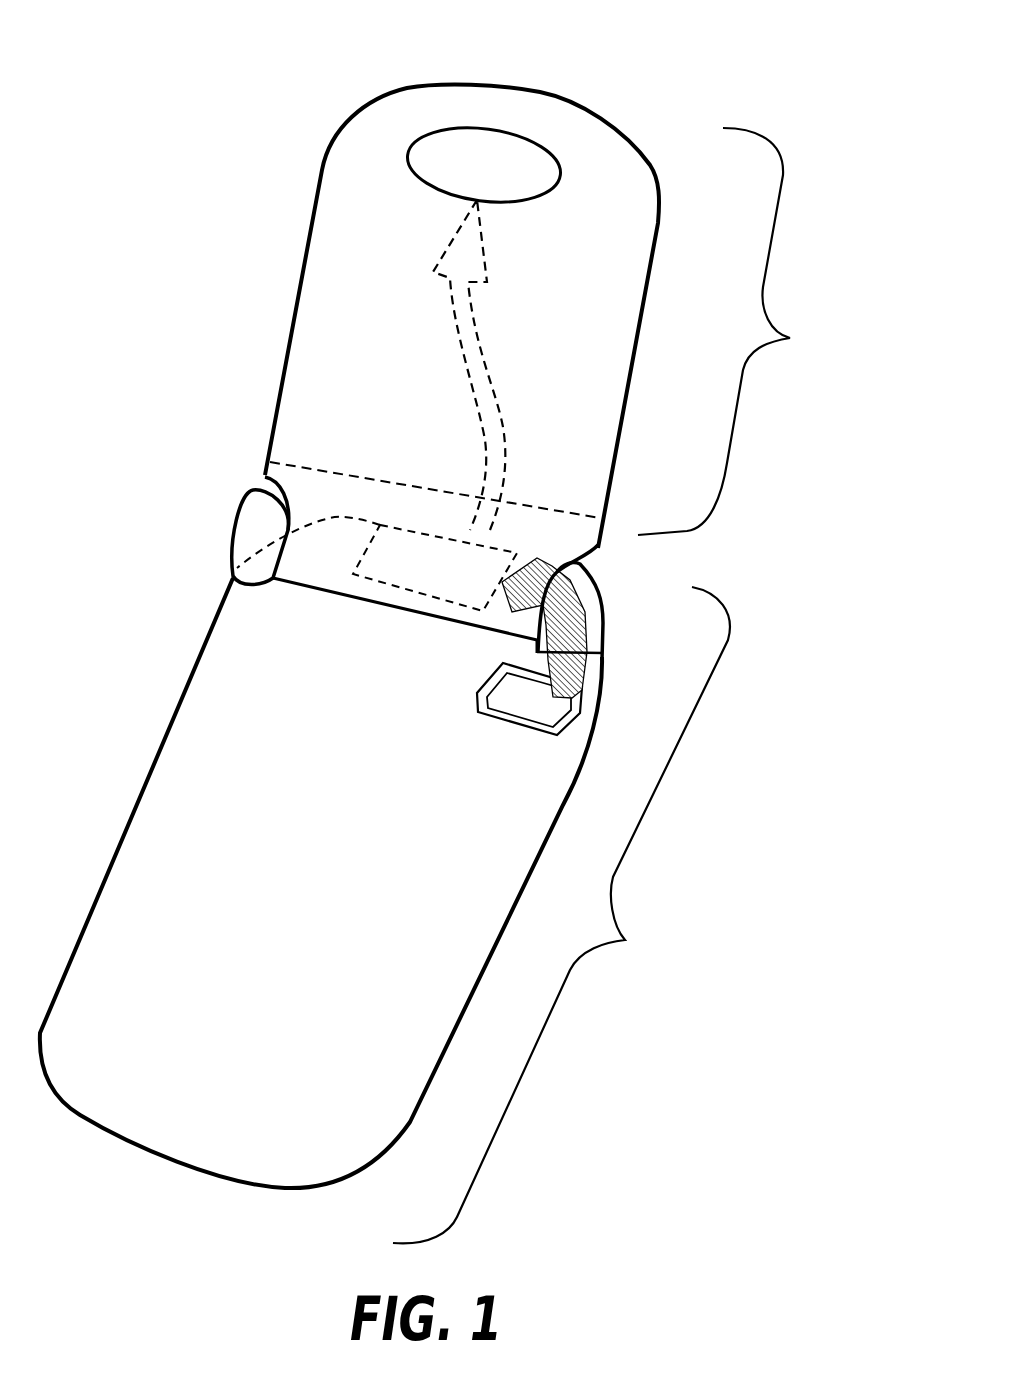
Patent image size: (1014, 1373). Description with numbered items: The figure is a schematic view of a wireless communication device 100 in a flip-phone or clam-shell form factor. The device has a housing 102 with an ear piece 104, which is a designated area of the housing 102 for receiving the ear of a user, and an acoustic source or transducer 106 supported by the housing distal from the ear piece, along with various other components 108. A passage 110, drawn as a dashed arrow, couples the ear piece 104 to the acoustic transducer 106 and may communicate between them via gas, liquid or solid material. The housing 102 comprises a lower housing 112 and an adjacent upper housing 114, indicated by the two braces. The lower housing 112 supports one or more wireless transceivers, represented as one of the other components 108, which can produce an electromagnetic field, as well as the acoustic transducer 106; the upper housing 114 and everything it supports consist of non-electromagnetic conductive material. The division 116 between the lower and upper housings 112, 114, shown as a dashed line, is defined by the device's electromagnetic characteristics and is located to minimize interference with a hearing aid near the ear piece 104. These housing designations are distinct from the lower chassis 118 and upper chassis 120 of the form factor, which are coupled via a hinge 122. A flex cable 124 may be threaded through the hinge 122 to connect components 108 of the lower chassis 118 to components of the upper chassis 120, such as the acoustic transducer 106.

The wireless communication device 100 is at (128, 25).
The housing 102 is at (126, 510).
The ear piece 104 is at (438, 176).
The acoustic transducer 106 is at (403, 522).
The other components 108 is at (513, 710).
The passage 110 is at (462, 346).
The lower housing 112 is at (561, 915).
The upper housing 114 is at (735, 331).
The division 116 is at (548, 506).
The lower chassis 118 is at (362, 108).
The upper chassis 120 is at (158, 746).
The hinge 122 is at (243, 540).
The flex cable 124 is at (592, 630).